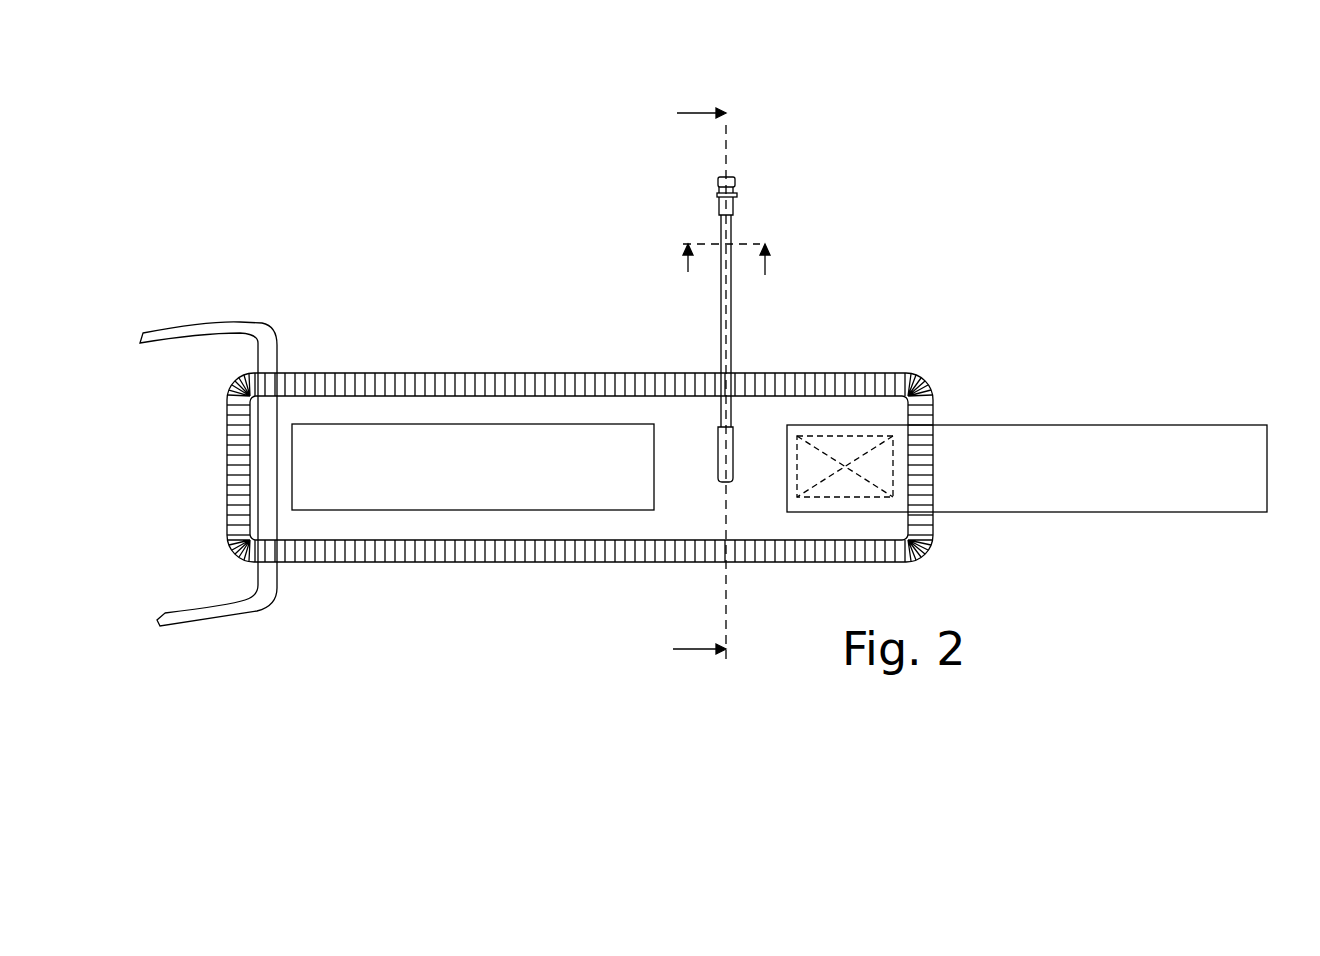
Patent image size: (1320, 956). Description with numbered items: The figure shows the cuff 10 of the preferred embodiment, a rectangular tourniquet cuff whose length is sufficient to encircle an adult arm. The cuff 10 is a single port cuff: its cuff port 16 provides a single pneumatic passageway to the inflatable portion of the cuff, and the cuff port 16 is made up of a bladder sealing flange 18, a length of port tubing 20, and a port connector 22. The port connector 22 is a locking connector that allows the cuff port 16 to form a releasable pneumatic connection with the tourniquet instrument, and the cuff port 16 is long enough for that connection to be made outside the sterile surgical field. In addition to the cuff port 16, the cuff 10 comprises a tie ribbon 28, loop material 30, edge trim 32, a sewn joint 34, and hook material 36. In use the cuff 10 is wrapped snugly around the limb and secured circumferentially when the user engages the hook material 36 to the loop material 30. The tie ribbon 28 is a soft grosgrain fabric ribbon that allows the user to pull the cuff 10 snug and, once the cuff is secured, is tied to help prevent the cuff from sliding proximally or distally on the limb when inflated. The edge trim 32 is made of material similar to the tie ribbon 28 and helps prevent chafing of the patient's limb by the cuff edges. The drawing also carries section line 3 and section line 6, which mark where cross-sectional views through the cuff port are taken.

The cuff 10 is at (1131, 150).
The section line 3- 3 is at (703, 385).
The section line 6- 6 is at (726, 253).
The cuff port 16 is at (817, 170).
The bladder sealing flange 18 is at (733, 430).
The port tubing 20 is at (730, 307).
The port connector 22 is at (740, 214).
The tie ribbon 28 is at (263, 323).
The loop material 30 is at (305, 510).
The edge trim 32 is at (494, 562).
The sewn joint 34 is at (870, 437).
The hook material 36 is at (1202, 427).